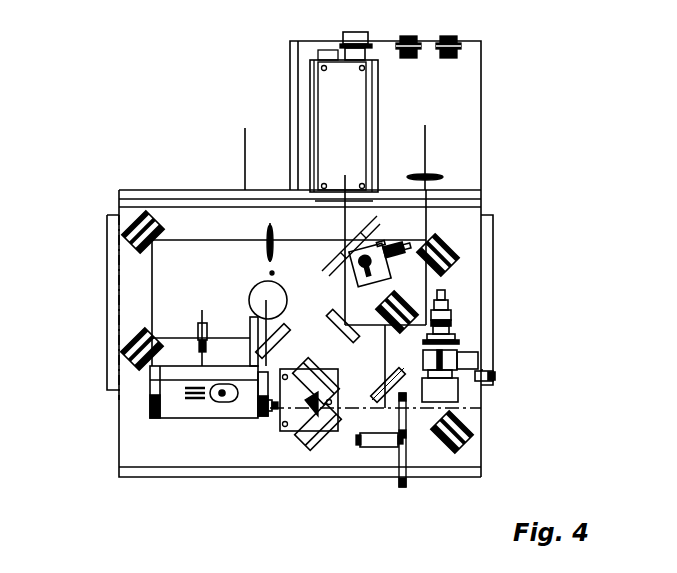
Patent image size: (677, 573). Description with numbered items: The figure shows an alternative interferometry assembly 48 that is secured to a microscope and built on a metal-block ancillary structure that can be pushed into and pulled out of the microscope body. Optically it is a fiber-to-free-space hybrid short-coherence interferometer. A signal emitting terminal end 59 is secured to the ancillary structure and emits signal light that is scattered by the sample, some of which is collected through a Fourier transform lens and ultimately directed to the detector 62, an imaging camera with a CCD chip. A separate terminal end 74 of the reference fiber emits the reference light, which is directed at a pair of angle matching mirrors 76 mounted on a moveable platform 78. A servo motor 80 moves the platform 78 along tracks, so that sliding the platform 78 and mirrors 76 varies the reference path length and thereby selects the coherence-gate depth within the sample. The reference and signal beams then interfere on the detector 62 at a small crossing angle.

The interferometry assembly 48 is at (90, 176).
The detector 62 is at (361, 106).
The signal emitting terminal end 59 is at (398, 283).
The terminal end 74 is at (458, 393).
The mirrors 76 is at (305, 368).
The moveable platform 78 is at (288, 406).
The servo motor 80 is at (205, 418).